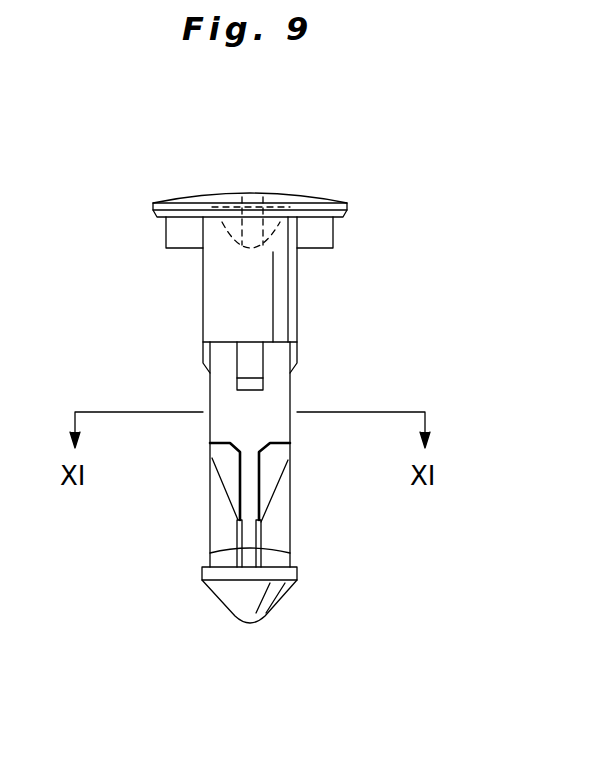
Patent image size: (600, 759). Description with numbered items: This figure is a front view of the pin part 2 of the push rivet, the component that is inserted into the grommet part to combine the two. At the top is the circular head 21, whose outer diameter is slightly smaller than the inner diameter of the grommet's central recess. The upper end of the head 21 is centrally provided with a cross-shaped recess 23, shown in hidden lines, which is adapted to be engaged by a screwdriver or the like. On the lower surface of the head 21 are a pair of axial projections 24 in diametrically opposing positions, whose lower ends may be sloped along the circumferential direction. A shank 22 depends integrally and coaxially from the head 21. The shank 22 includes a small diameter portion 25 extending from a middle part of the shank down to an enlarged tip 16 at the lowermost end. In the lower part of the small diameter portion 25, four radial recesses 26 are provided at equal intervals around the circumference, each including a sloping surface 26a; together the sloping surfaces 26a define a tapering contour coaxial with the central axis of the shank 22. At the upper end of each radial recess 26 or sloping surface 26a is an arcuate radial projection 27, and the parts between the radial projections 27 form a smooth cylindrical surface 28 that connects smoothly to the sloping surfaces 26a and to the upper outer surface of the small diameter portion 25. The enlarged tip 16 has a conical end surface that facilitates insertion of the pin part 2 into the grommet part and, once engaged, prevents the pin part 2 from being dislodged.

The pin part 2 is at (392, 226).
The circular head 21 is at (322, 200).
The cross-shaped recess 23 is at (248, 230).
The axial projections 24 is at (180, 247).
The shank 22 is at (298, 318).
The small diameter portion 25 is at (290, 393).
The smooth cylindrical surface 28 is at (246, 442).
The arcuate radial projection 27 is at (221, 450).
The sloping surface 26a is at (230, 492).
The radial recesses 26 is at (207, 553).
The enlarged tip 16 is at (248, 620).